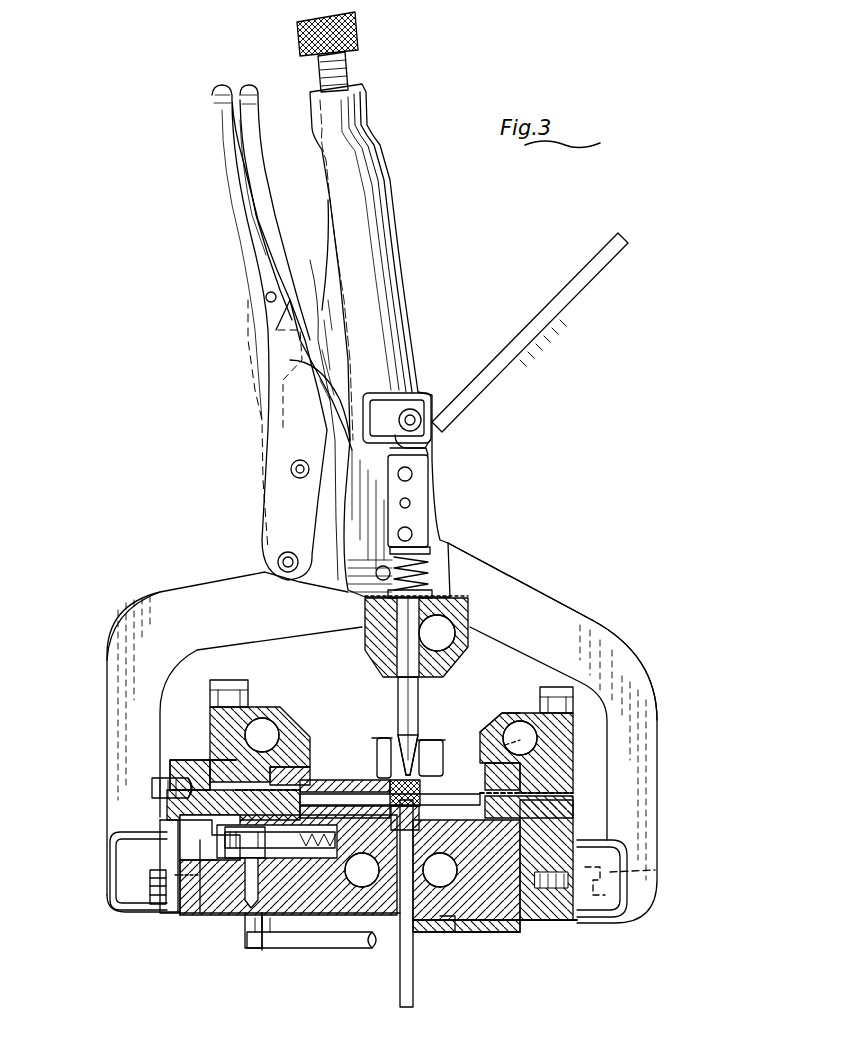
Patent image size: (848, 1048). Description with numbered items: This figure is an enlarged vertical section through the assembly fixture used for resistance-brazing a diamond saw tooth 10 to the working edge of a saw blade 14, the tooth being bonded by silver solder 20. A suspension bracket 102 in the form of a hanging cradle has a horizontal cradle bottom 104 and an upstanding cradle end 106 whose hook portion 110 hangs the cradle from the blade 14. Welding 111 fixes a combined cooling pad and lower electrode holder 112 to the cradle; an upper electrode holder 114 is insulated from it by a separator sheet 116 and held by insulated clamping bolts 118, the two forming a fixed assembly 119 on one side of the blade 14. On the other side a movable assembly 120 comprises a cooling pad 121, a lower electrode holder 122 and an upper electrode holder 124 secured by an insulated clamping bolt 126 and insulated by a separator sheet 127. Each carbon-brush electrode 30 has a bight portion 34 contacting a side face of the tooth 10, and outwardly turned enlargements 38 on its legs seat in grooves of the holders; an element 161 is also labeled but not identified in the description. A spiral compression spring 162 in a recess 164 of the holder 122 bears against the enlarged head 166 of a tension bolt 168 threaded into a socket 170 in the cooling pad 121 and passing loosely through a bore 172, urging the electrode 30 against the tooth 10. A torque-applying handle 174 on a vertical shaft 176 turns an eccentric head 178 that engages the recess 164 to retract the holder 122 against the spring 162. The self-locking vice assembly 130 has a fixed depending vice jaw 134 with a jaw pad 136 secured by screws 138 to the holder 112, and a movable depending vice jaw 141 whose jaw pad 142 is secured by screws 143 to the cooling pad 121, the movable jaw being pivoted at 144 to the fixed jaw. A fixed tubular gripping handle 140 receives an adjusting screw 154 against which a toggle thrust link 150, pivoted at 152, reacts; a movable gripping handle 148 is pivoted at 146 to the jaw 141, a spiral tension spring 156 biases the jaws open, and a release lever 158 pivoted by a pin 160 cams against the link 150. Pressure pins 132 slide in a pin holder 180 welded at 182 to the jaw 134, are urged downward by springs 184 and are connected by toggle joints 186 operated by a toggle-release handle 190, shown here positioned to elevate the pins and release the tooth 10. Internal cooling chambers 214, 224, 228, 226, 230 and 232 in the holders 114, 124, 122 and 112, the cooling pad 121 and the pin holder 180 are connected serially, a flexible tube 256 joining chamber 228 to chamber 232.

The fixed depending vice jaw 134 is at (650, 660).
The movable depending vice jaw 141 is at (122, 640).
The insulated clamping bolts 118 is at (565, 690).
The welding 182 is at (455, 598).
The jaw pad 142 is at (150, 874).
The screws 143 is at (150, 900).
The jaw pad 136 is at (592, 915).
The screws 138 is at (646, 876).
The movable gripping handle 148 is at (208, 118).
The release lever 158 is at (250, 90).
The pin 160 is at (266, 297).
The spiral tension spring 156 is at (345, 418).
The pivot 152 is at (290, 469).
The pivot 146 is at (278, 560).
The tubular gripping handle 140 is at (378, 152).
The adjusting screw 154 is at (358, 40).
The toggle thrust link 150 is at (330, 340).
The vice assembly 130 is at (436, 398).
The toggle-release handle 190 is at (563, 305).
The toggle joints 186 is at (430, 500).
The spiral compression springs 184 is at (432, 575).
The pivot 144 is at (380, 568).
The pin holder 180 is at (372, 640).
The internal cooling chamber 232 is at (455, 625).
The saw blade 14 is at (413, 1005).
The pressure pins 132 is at (398, 700).
The upper electrode holder 124 is at (208, 718).
The insulated clamping bolt 126 is at (238, 680).
The internal cooling chamber 224 is at (272, 718).
The movable assembly 120 is at (310, 732).
The insulating separator sheet 127 is at (226, 757).
The internal cooling chamber 228 is at (190, 766).
The lower electrode holder 122 is at (164, 762).
The flexible tube 256 is at (150, 790).
The electrode 30 is at (312, 788).
The enlargements 38 is at (262, 786).
The hook portions 110 is at (368, 775).
The clamp 161 is at (383, 760).
The bight portion 34 is at (482, 770).
The fixed assembly 119 is at (476, 728).
The upper electrode holder 114 is at (578, 740).
The internal cooling chamber 214 is at (514, 725).
The insulating separator sheet 116 is at (560, 792).
The diamond saw tooth 10 is at (416, 810).
The silver solder 20 is at (440, 870).
The internal cooling chamber 230 is at (360, 888).
The combined cooling pad and lower electrode holder 112 is at (546, 860).
The suspension bracket 102 is at (440, 935).
The internal cooling chamber 226 is at (470, 930).
The cradle bottom 104 is at (490, 936).
The cradle end 106 is at (545, 925).
The welding 111 is at (525, 938).
The cooling pad 121 is at (316, 909).
The recess 164 is at (162, 820).
The enlarged head 166 is at (188, 848).
The socket 170 is at (340, 815).
The tension bolt 168 is at (322, 850).
The horizontal bore 172 is at (260, 870).
The spiral compressional spring 162 is at (230, 890).
The eccentric head 178 is at (245, 912).
The vertical shaft 176 is at (262, 913).
The torque-applying handle 174 is at (262, 948).